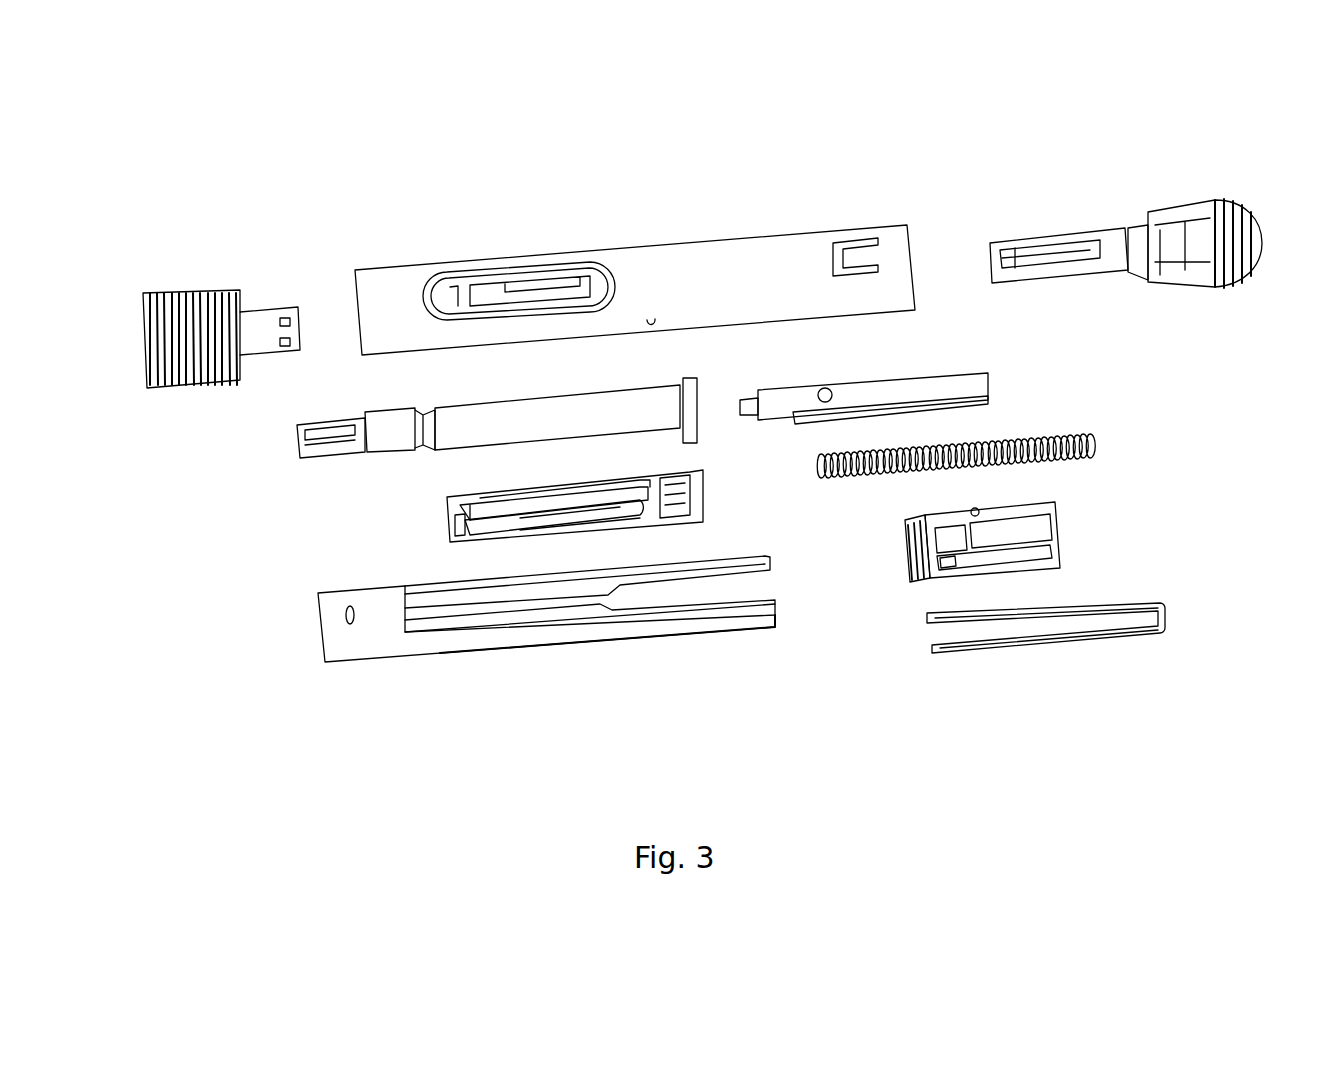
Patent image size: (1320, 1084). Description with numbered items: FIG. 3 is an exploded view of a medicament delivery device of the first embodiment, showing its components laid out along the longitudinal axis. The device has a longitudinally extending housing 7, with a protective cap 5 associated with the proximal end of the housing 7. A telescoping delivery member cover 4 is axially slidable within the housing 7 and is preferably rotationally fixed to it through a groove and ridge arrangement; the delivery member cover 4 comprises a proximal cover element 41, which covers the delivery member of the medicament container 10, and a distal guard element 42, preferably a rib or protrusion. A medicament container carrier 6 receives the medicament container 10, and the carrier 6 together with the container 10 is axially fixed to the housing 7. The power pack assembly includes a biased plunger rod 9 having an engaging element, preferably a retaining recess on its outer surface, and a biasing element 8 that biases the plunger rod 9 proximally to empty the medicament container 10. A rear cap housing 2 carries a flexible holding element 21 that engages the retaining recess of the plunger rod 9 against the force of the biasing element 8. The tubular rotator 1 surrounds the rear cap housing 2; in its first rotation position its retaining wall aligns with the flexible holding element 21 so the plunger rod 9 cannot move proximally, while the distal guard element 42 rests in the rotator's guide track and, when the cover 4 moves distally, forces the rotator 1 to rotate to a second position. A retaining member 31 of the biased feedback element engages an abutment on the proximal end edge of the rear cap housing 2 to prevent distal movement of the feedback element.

The tubular rotator 1 is at (1058, 545).
The rear cap housing 2 is at (1126, 205).
The delivery member cover 4 is at (573, 660).
The protective cap 5 is at (215, 380).
The medicament container carrier 6 is at (447, 527).
The housing 7 is at (690, 240).
The biasing element 8 is at (1092, 437).
The biased plunger rod 9 is at (990, 378).
The medicament container 10 is at (432, 453).
The flexible holding element 21 is at (1030, 243).
The retaining member 31 is at (932, 648).
The proximal cover element 41 is at (358, 663).
The distal guard element 42 is at (770, 570).